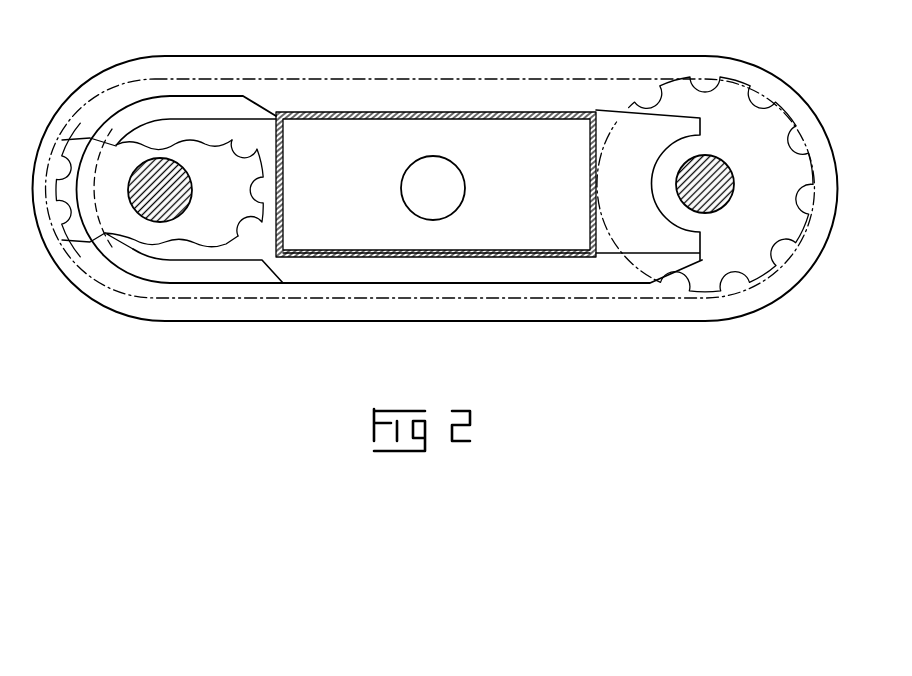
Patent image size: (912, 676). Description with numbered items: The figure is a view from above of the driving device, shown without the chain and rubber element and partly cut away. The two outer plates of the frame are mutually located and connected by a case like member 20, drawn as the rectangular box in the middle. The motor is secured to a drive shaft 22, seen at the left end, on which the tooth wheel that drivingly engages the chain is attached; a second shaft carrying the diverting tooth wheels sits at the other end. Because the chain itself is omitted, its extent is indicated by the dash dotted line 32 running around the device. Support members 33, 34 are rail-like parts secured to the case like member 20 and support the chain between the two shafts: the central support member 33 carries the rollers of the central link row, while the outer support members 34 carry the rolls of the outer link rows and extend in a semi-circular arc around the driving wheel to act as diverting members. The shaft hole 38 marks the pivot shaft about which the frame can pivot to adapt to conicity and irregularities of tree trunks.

The case like member 20 is at (290, 150).
The drive shaft 22 is at (175, 195).
The dash dotted line 32 is at (420, 78).
The central support member 33 is at (482, 268).
The outer support member 34 is at (116, 127).
The shaft hole 38 is at (446, 182).